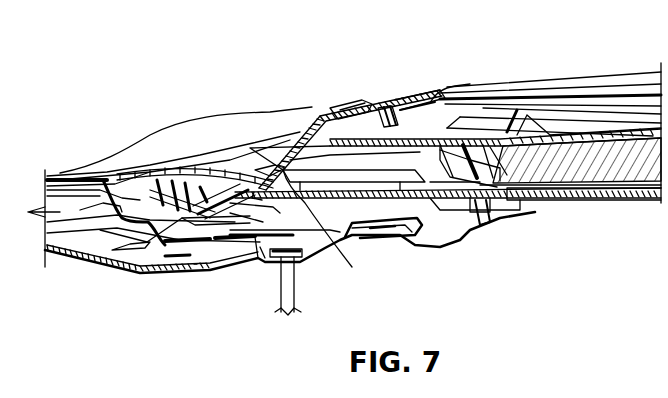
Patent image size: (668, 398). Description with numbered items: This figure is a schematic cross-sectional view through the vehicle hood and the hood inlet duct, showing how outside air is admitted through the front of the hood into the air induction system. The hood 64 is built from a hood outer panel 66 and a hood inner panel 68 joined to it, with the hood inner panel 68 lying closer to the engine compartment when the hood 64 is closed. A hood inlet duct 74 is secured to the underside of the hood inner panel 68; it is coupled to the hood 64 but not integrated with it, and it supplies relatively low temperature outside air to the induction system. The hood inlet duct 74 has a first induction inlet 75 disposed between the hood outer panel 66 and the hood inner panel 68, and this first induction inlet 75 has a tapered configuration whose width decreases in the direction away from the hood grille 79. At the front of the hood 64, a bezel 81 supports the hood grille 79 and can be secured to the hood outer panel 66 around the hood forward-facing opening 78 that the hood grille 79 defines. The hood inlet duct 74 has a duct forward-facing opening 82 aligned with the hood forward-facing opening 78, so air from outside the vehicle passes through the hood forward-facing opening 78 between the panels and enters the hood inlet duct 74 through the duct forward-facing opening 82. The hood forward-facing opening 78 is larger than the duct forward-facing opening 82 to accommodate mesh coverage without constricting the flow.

The hood 64 is at (528, 83).
The hood outer panel 66 is at (455, 87).
The hood inner panel 68 is at (412, 247).
The hood inlet duct 74 is at (588, 198).
The first induction inlet 75 is at (403, 103).
The hood forward-facing opening 78 is at (252, 180).
The hood grille 79 is at (305, 122).
The bezel 81 is at (350, 107).
The duct forward-facing opening 82 is at (352, 268).